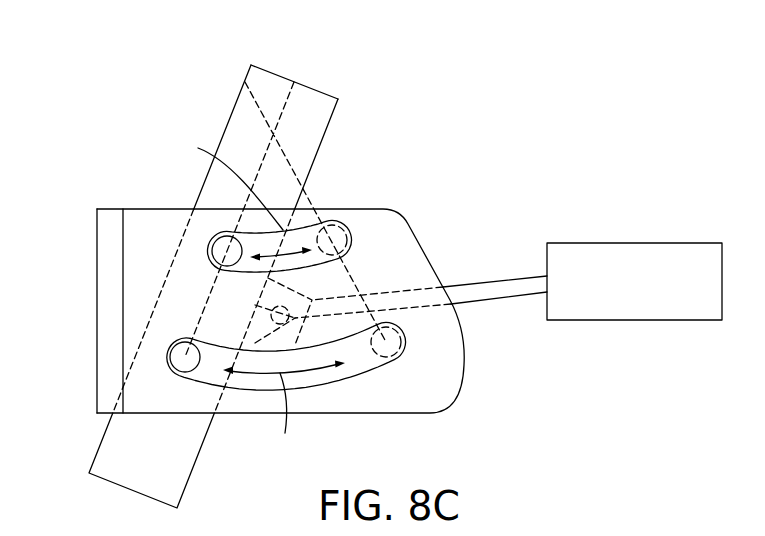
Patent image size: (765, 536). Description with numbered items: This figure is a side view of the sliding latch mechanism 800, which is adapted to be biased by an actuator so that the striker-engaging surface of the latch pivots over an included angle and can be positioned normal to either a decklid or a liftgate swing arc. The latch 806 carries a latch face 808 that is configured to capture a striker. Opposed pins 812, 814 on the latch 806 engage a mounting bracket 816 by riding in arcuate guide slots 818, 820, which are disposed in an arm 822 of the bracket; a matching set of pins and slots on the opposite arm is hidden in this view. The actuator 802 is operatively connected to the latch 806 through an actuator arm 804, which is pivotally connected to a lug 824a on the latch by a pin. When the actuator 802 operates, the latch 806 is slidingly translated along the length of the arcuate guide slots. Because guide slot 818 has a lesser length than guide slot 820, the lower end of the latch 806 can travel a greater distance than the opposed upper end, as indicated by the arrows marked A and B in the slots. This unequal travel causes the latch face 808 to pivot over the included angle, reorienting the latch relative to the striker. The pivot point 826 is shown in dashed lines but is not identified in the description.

The sliding latch mechanism 800 is at (92, 80).
The actuator 802 is at (505, 286).
The actuator arm 804 is at (625, 243).
The latch 806 is at (325, 117).
The latch face 808 is at (270, 70).
The pin 812 is at (213, 252).
The pin 814 is at (167, 362).
The mounting bracket 816 is at (105, 274).
The arcuate guide slot 818 is at (223, 252).
The arcuate guide slot 820 is at (180, 362).
The arm 822 is at (455, 371).
The lug 824a is at (316, 332).
The pivot 826 is at (290, 322).